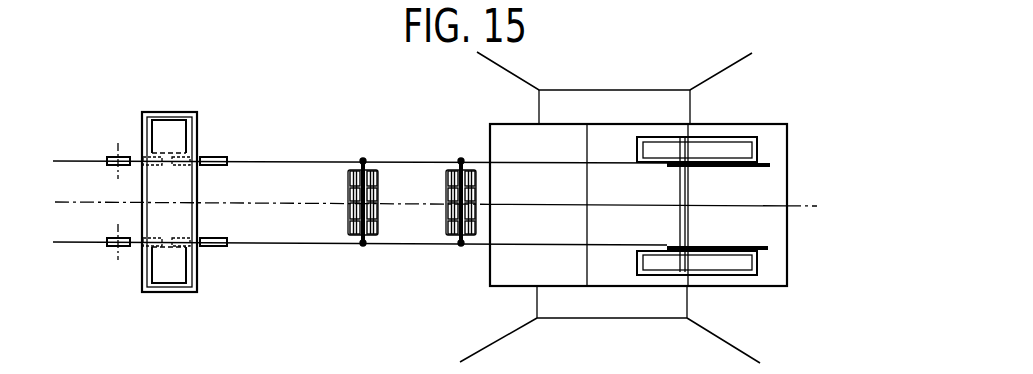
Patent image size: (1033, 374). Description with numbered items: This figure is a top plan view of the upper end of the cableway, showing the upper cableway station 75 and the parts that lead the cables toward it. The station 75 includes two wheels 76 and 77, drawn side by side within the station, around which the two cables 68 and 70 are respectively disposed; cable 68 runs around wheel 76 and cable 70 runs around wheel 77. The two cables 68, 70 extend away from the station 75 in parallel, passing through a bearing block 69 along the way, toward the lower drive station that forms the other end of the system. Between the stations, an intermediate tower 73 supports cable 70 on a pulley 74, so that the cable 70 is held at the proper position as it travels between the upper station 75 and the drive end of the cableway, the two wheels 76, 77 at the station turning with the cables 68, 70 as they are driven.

The cable 68 is at (270, 161).
The bearing block 69 is at (447, 190).
The cable 70 is at (308, 245).
The intermediate tower 73 is at (178, 141).
The pulley 74 is at (216, 248).
The upper cableway station 75 is at (680, 96).
The wheel 76 is at (729, 166).
The wheel 77 is at (728, 248).